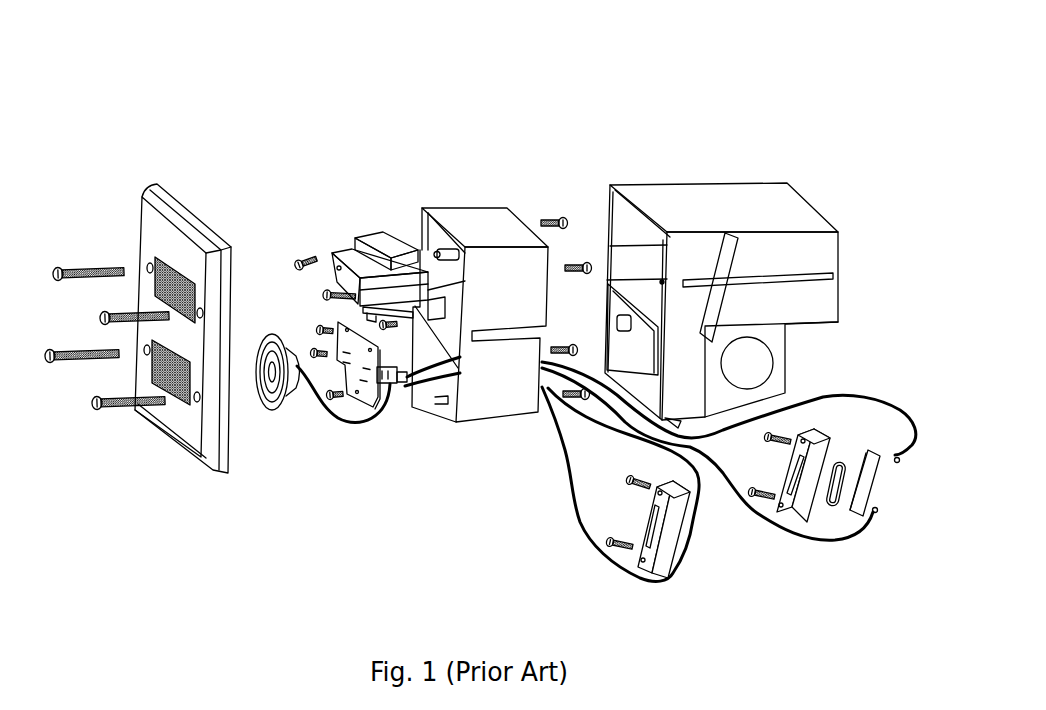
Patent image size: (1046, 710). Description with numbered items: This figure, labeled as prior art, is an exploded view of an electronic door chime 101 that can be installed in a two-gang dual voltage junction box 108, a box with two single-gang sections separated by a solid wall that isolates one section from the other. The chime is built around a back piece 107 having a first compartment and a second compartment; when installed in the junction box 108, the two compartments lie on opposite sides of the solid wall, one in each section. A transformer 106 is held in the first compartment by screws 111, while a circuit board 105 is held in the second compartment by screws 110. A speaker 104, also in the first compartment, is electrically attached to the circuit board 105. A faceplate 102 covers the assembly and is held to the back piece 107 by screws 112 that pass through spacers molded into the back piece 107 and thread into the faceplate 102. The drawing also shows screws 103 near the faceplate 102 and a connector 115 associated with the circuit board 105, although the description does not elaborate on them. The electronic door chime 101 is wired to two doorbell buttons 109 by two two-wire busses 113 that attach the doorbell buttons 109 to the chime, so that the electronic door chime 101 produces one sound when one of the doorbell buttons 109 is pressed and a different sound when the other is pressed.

The electronic door chime 101 is at (252, 103).
The faceplate 102 is at (177, 215).
The mounting screws 103 is at (110, 407).
The speaker 104 is at (271, 408).
The circuit board 105 is at (360, 409).
The transformer 106 is at (387, 247).
The back piece 107 is at (462, 223).
The two-gang dual voltage junction box 108 is at (717, 210).
The doorbell buttons 109 is at (870, 425).
The screws 110 is at (333, 405).
The screws 111 is at (312, 258).
The screws 112 is at (553, 217).
The two-wire busses 113 is at (548, 434).
The connector 115 is at (392, 384).